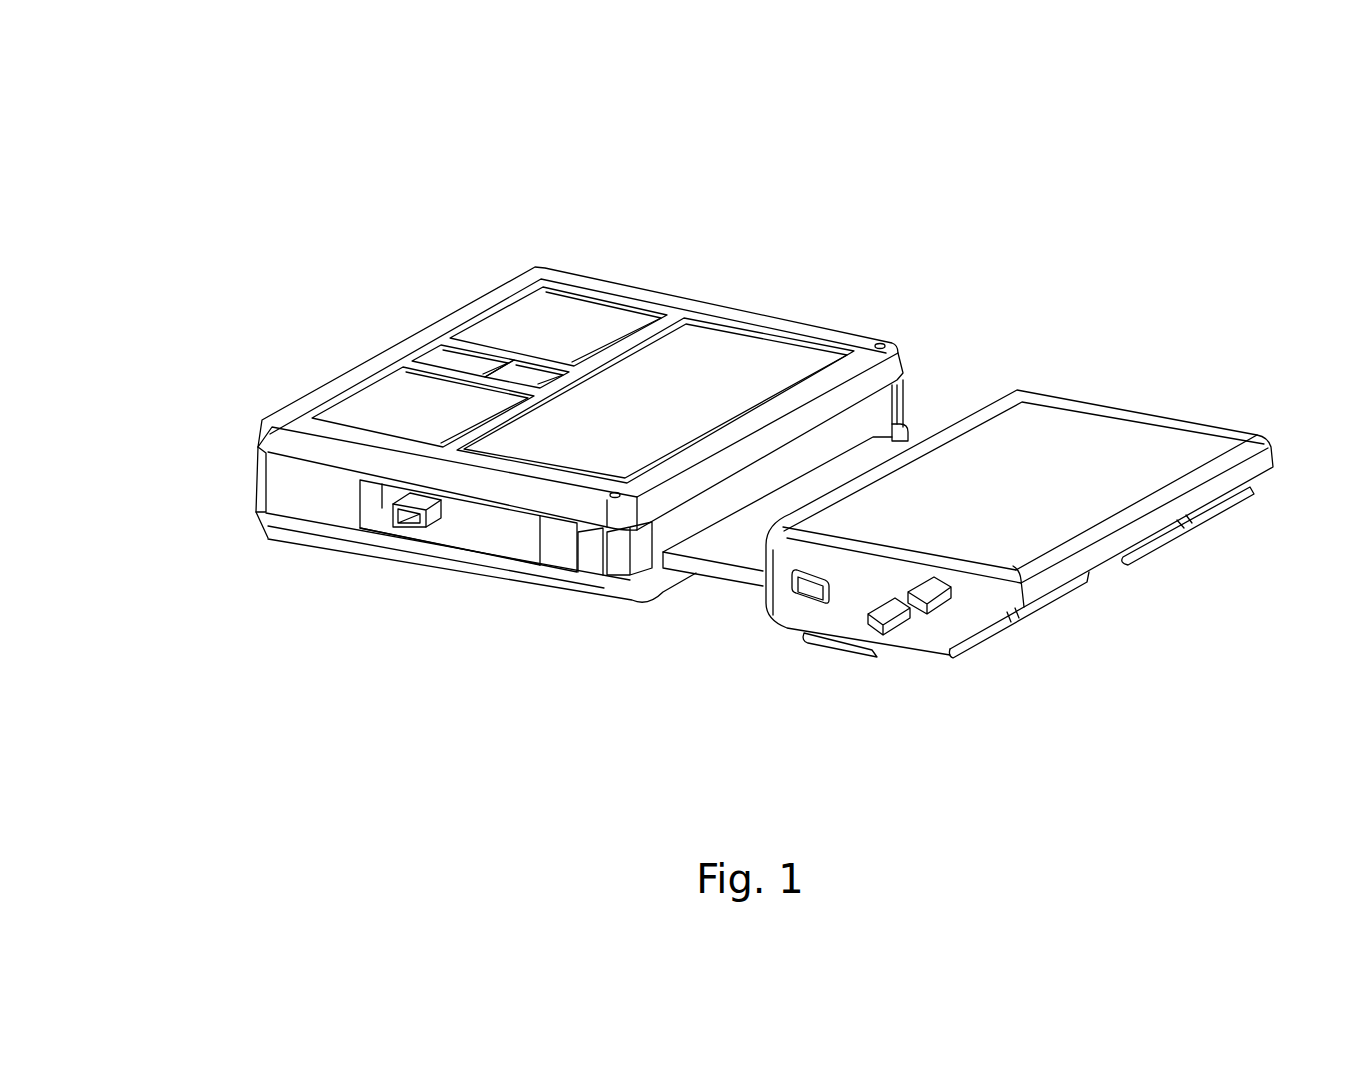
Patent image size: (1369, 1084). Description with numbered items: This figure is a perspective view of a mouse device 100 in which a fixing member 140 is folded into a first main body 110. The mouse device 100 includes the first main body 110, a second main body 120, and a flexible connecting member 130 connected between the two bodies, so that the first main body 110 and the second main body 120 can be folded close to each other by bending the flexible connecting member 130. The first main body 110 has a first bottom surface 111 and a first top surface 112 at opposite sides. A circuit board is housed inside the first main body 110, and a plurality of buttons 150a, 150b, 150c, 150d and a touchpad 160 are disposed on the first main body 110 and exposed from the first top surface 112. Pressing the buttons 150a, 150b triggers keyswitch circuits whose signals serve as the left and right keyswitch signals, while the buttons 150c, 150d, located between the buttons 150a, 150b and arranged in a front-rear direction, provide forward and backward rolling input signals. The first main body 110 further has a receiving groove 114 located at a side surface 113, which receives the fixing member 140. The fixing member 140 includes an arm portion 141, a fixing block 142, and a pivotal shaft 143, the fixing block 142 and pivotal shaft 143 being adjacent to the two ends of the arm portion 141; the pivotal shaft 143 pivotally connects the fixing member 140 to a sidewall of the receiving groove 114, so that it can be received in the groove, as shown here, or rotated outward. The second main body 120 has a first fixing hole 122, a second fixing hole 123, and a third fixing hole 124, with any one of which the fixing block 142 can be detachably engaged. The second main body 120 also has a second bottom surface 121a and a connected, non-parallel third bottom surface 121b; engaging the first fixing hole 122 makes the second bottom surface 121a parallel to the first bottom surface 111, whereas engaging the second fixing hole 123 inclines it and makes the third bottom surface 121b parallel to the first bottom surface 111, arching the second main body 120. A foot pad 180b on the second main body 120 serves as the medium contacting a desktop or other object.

The mouse device 100 is at (270, 125).
The first main body 110 is at (241, 334).
The first bottom surface 111 is at (303, 547).
The first top surface 112 is at (288, 422).
The side surface 113 is at (277, 497).
The receiving groove 114 is at (378, 530).
The second main body 120 is at (1068, 420).
The second bottom surface 121a is at (903, 657).
The third bottom surface 121b is at (1098, 570).
The first fixing hole 122 is at (796, 606).
The second fixing hole 123 is at (872, 632).
The third fixing hole 124 is at (932, 618).
The flexible connecting member 130 is at (877, 450).
The fixing member 140 is at (410, 657).
The arm portion 141 is at (497, 540).
The fixing block 142 is at (412, 528).
The pivotal shaft 143 is at (612, 567).
The button 150a is at (390, 400).
The button 150b is at (538, 308).
The button 150c is at (439, 358).
The button 150d is at (524, 372).
The touchpad 160 is at (725, 355).
The foot pad 180b is at (825, 642).